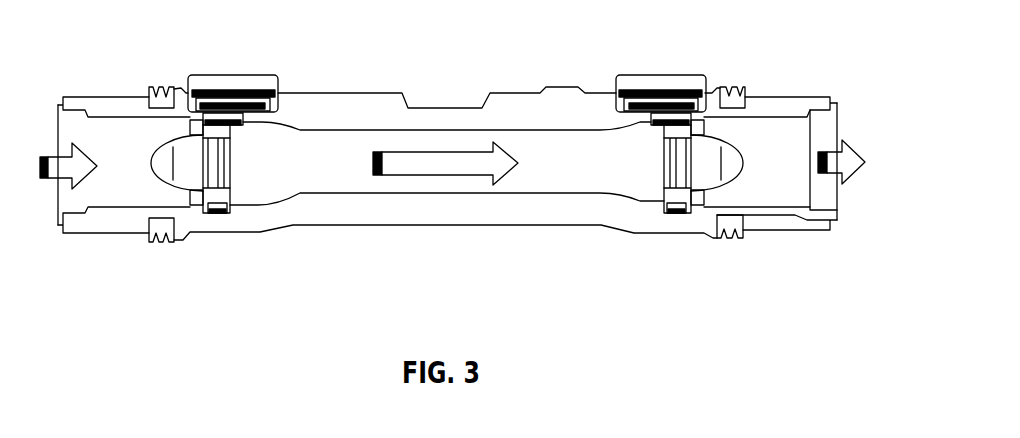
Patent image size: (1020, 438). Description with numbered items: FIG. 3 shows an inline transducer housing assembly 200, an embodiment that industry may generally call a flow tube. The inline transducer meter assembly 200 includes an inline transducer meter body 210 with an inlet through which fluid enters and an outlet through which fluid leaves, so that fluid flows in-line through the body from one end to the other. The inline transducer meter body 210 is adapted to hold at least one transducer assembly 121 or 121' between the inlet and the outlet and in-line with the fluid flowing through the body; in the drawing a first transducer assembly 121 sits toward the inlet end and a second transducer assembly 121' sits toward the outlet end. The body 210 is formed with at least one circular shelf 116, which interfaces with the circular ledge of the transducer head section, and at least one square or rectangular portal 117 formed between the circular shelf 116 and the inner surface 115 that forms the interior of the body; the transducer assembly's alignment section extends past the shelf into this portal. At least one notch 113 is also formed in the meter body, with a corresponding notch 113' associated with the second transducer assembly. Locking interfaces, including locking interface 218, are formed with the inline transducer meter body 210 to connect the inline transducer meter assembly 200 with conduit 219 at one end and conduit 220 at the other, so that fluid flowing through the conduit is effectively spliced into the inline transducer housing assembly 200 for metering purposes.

The inline transducer housing assembly 200 is at (483, 33).
The inline transducer meter body 210 is at (448, 122).
The inner surface 115 is at (343, 129).
The circular shelf 116 is at (269, 120).
The square or rectangular portal 117 is at (160, 89).
The first transducer assembly 121 is at (233, 64).
The transducer assembly 121' is at (661, 65).
The notch 113 is at (234, 253).
The notch 113' is at (698, 252).
The locking interface 218 is at (743, 89).
The conduit 219 is at (93, 96).
The conduit 220 is at (813, 97).